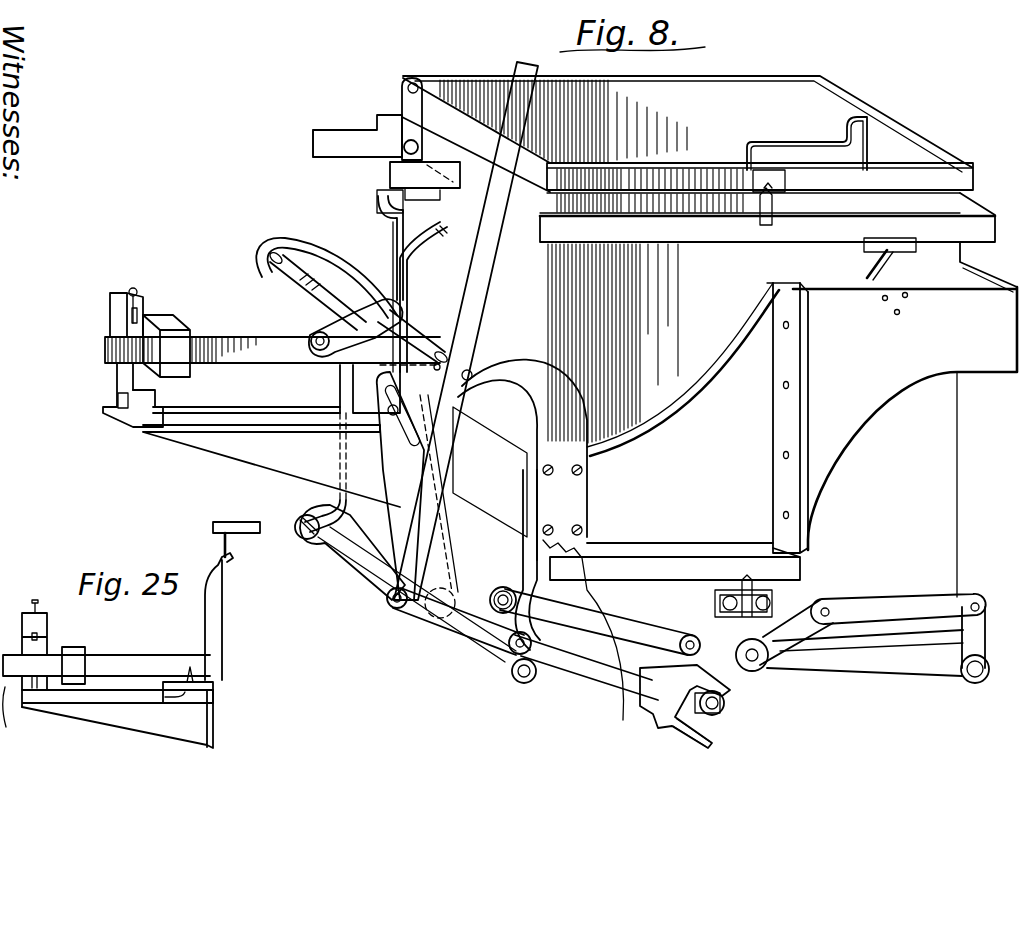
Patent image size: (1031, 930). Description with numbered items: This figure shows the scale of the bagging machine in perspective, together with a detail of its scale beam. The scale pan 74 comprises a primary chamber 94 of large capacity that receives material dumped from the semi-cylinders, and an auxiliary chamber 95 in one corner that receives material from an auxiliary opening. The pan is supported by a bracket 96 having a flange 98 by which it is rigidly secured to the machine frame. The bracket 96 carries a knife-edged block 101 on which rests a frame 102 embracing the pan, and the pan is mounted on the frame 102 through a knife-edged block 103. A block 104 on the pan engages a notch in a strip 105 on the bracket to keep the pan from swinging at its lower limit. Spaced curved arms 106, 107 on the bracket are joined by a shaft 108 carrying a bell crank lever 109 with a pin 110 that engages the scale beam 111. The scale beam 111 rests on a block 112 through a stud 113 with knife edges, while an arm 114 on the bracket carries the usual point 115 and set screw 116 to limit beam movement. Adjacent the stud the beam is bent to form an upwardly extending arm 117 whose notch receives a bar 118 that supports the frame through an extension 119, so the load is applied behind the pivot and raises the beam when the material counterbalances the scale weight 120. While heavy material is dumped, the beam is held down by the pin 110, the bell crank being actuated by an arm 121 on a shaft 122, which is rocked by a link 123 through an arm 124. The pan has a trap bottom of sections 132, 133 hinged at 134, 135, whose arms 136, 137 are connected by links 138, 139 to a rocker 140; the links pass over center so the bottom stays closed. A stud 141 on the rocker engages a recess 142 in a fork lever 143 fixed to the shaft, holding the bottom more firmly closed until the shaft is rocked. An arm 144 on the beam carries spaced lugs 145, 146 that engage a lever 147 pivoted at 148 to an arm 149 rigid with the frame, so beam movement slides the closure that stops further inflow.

In FIG. 8, the scale pan 74 is at (624, 343).
In FIG. 8, the primary chamber 94 is at (687, 144).
In FIG. 8, the auxiliary chamber 95 is at (828, 143).
In FIG. 8, the bracket 96 is at (780, 501).
In FIG. 8, the flange 98 is at (802, 390).
In FIG. 8, the block 101 is at (893, 257).
In FIG. 8, the frame 102 is at (812, 237).
In FIG. 8, the block 103 is at (773, 207).
In FIG. 8, the block 104 is at (777, 587).
In FIG. 8, the strip 105 is at (700, 573).
In FIG. 8, the curved arm 106 is at (520, 505).
In FIG. 8, the curved arm 107 is at (273, 252).
In FIG. 8, the shaft 108 is at (313, 287).
In FIG. 8, the bell crank lever 109 is at (335, 358).
In FIG. 8, the pin 110 is at (300, 320).
In FIG. 8, the scale beam 111 is at (240, 328).
In FIG. 25, the scale beam 111 is at (140, 648).
In FIG. 8, the block 112 is at (410, 393).
In FIG. 25, the block 112 is at (200, 692).
In FIG. 8, the stud 113 is at (425, 352).
In FIG. 25, the stud 113 is at (190, 668).
In FIG. 8, the arm 114 is at (270, 457).
In FIG. 25, the arm 114 is at (165, 725).
In FIG. 8, the point 115 is at (105, 393).
In FIG. 25, the point 115 is at (108, 711).
In FIG. 8, the set screw 116 is at (150, 282).
In FIG. 25, the set screw 116 is at (40, 608).
In FIG. 8, the upwardly extending arm 117 is at (423, 265).
In FIG. 25, the upwardly extending arm 117 is at (222, 608).
In FIG. 8, the bar 118 is at (410, 212).
In FIG. 25, the bar 118 is at (228, 548).
In FIG. 8, the extension 119 is at (390, 176).
In FIG. 8, the scale weight 120 is at (200, 303).
In FIG. 25, the scale weight 120 is at (80, 643).
In FIG. 8, the arm 121 is at (433, 553).
In FIG. 8, the shaft 122 is at (510, 660).
In FIG. 8, the link 123 is at (488, 236).
In FIG. 8, the arm 124 is at (447, 623).
In FIG. 8, the bottom section 132 is at (665, 700).
In FIG. 8, the bottom section 133 is at (917, 676).
In FIG. 8, the hinge 134 is at (530, 683).
In FIG. 8, the hinge 135 is at (973, 683).
In FIG. 8, the arm 136 is at (367, 537).
In FIG. 8, the arm 137 is at (980, 643).
In FIG. 8, the link 138 is at (680, 627).
In FIG. 8, the link 139 is at (920, 587).
In FIG. 8, the rocker 140 is at (763, 660).
In FIG. 8, the stud 141 is at (712, 700).
In FIG. 8, the recess 142 is at (705, 725).
In FIG. 8, the lever 143 is at (614, 680).
In FIG. 8, the arm 144 is at (397, 262).
In FIG. 8, the lug 145 is at (428, 200).
In FIG. 8, the lug 146 is at (378, 203).
In FIG. 8, the lever 147 is at (410, 107).
In FIG. 8, the pivot 148 is at (402, 148).
In FIG. 8, the arm 149 is at (352, 118).